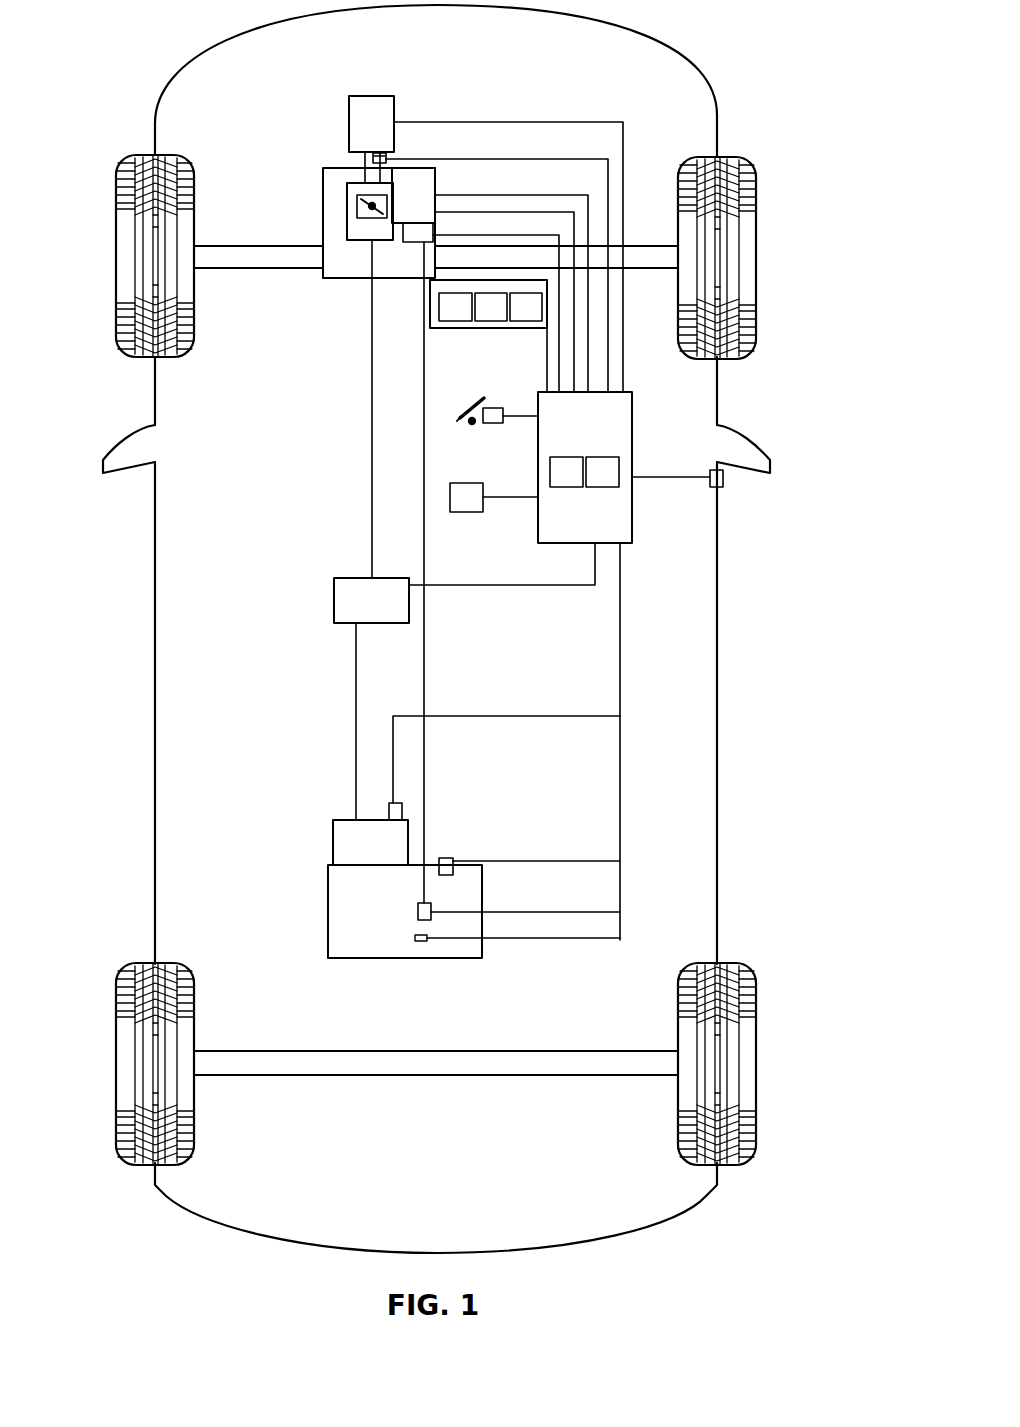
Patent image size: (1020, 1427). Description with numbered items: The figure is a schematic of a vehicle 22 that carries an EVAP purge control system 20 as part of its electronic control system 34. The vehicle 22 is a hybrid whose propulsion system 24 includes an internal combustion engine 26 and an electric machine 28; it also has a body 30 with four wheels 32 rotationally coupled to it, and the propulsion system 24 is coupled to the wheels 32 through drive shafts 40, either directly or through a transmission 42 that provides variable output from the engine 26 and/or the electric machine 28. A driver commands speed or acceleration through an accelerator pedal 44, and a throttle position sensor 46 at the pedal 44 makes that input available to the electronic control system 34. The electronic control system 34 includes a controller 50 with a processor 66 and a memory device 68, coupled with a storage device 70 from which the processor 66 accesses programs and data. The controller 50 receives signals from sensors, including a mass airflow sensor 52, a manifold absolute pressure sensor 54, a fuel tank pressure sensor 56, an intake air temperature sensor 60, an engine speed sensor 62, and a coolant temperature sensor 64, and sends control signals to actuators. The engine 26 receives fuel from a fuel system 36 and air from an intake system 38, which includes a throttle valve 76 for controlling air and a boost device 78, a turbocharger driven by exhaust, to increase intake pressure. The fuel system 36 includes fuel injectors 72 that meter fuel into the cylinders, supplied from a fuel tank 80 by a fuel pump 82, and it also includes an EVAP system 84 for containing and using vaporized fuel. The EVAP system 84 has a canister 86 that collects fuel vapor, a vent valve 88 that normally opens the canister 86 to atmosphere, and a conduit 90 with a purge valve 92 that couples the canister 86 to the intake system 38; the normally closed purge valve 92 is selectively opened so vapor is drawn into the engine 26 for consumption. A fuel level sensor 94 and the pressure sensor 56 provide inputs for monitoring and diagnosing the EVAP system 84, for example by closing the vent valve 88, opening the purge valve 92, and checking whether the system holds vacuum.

The EVAP purge control system 20 is at (692, 502).
The vehicle 22 is at (690, 28).
The propulsion system 24 is at (342, 154).
The internal combustion engine 26 is at (330, 186).
The electric machine 28 is at (490, 280).
The body 30 is at (155, 700).
The wheels 32 is at (116, 250).
The electronic control system 34 is at (703, 392).
The fuel system 36 is at (452, 225).
The intake system 38 is at (406, 94).
The drive shafts 40 is at (256, 247).
The transmission 42 is at (342, 252).
The accelerator pedal 44 is at (474, 400).
The throttle position sensor 46 is at (493, 426).
The controller 50 is at (633, 437).
The mass airflow (MAF) sensor 52 is at (388, 155).
The manifold absolute pressure (MAP) sensor 54 is at (388, 160).
The fuel tank pressure sensor 56 is at (447, 857).
The intake air temperature sensor 60 is at (488, 336).
The engine speed (crank position) sensor 62 is at (491, 307).
The coolant temperature sensor 64 is at (526, 307).
The processor 66 is at (566, 472).
The memory device 68 is at (602, 472).
The storage device 70 is at (494, 497).
The fuel injectors 72 is at (410, 244).
The throttle valve 76 is at (357, 207).
The boost device 78 is at (486, 244).
The fuel tank 80 is at (328, 915).
The fuel pump 82 is at (418, 910).
The EVAP system 84 is at (310, 562).
The canister 86 is at (333, 845).
The vent valve 88 is at (392, 803).
The conduit 90 is at (356, 700).
The purge valve 92 is at (371, 600).
The fuel level sensor 94 is at (415, 938).